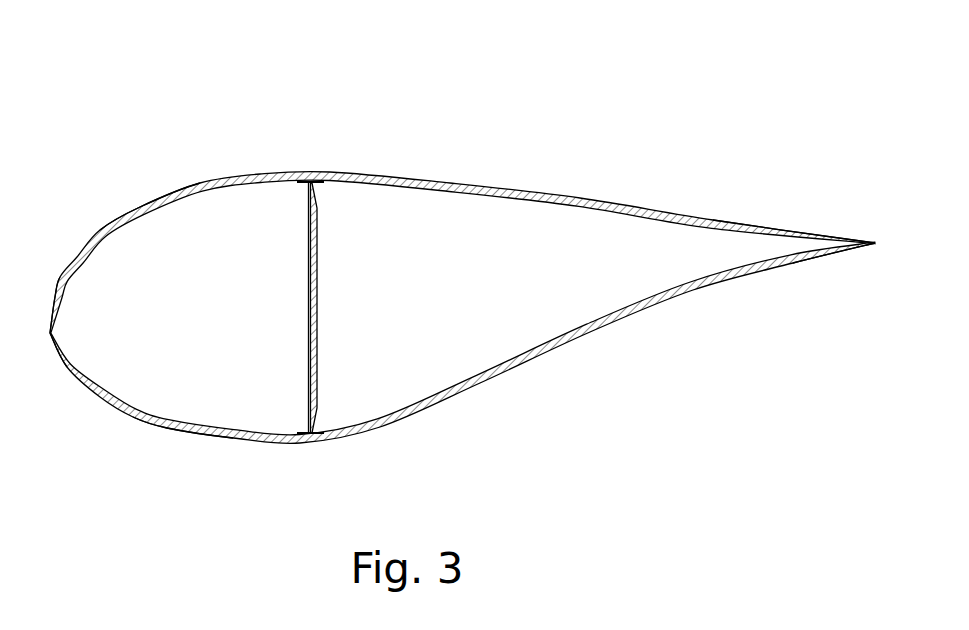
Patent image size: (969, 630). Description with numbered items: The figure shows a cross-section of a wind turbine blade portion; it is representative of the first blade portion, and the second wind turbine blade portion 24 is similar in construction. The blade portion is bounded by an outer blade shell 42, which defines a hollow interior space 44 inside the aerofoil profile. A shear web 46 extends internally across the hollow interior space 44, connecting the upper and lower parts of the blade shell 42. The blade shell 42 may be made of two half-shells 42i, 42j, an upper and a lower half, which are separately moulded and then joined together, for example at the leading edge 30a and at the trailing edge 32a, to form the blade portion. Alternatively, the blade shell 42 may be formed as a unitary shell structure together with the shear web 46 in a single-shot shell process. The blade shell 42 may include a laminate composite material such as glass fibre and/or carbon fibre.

The second wind turbine blade portion 24 is at (340, 108).
The leading edge 30a is at (50, 340).
The trailing edge 32a is at (875, 240).
The outer blade shell 42 is at (600, 197).
The half-shell 42i is at (140, 207).
The half-shell 42j is at (172, 429).
The hollow interior space 44 is at (103, 328).
The shear web 46 is at (316, 290).